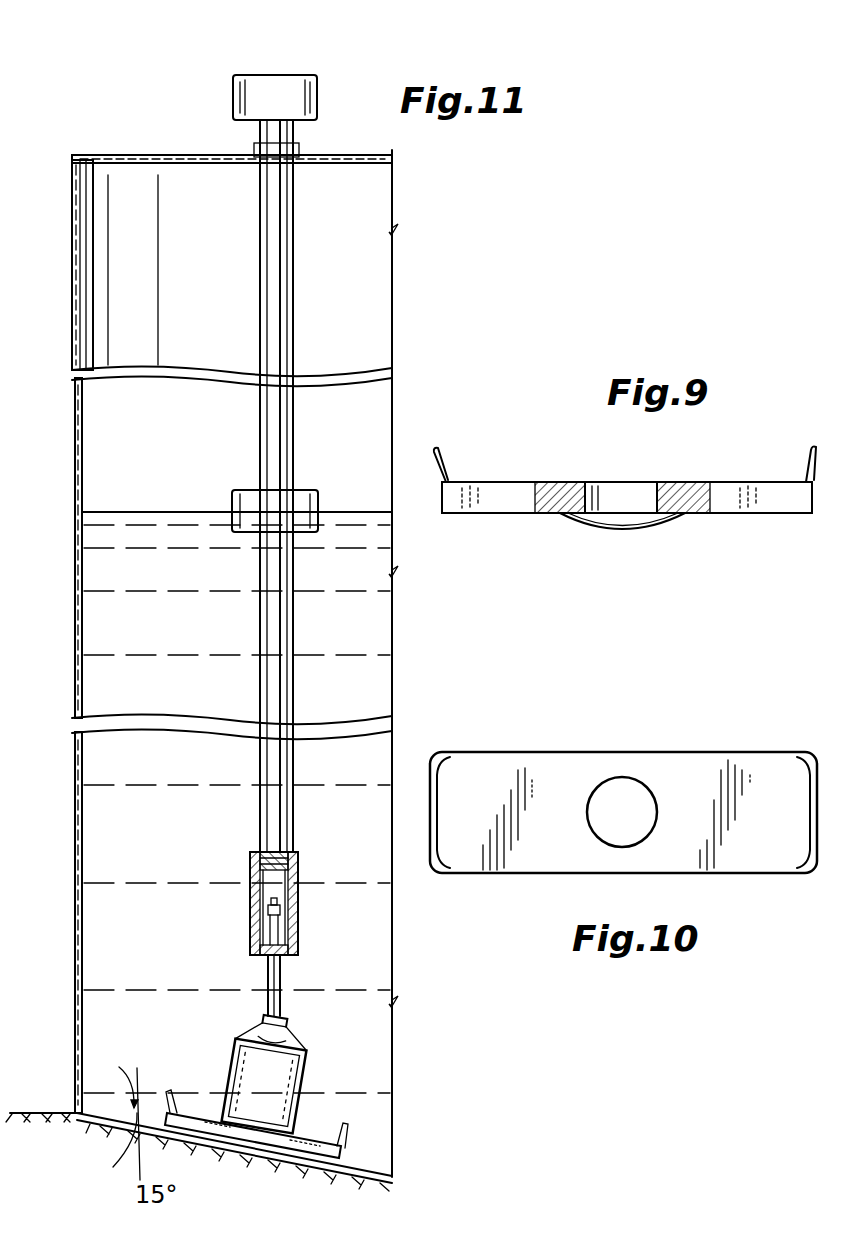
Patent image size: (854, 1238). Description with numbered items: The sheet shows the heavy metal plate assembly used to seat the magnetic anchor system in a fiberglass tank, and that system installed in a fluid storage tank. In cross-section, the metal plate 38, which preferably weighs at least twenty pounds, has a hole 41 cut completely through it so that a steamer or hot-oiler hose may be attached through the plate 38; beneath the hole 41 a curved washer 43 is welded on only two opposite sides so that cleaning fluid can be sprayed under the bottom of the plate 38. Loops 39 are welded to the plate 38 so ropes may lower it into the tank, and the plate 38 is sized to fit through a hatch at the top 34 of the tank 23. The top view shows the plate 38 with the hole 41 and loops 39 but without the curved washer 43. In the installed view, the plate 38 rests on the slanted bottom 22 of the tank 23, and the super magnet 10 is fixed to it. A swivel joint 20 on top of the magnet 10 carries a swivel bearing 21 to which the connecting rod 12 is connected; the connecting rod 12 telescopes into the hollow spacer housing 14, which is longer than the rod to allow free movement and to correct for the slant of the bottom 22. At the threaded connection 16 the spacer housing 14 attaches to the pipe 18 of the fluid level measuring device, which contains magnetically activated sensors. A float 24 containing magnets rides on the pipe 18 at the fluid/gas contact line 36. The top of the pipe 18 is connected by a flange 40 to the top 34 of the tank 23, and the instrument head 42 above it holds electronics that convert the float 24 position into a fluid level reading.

In FIG. 11, the super magnet 10 is at (295, 1112).
In FIG. 11, the connecting rod 12 is at (282, 1000).
In FIG. 11, the spacer housing 14 is at (302, 935).
In FIG. 11, the threaded connection 16 is at (295, 862).
In FIG. 11, the pipe 18 is at (290, 345).
In FIG. 11, the swivel joint 20 is at (308, 1050).
In FIG. 11, the swivel bearing 21 is at (285, 1022).
In FIG. 11, the bottom of the tank 22 is at (370, 1172).
In FIG. 11, the tank 23 is at (75, 285).
In FIG. 11, the float 24 is at (305, 490).
In FIG. 11, the top of the tank 34 is at (342, 157).
In FIG. 11, the fluid/gas contact line 36 is at (178, 512).
In FIG. 11, the metal plate 38 is at (310, 1140).
In FIG. 9, the metal plate 38 is at (740, 484).
In FIG. 10, the metal plate 38 is at (565, 785).
In FIG. 9, the loops 39 is at (450, 470).
In FIG. 10, the loops 39 is at (442, 780).
In FIG. 11, the flange 40 is at (258, 163).
In FIG. 9, the hole 41 is at (635, 495).
In FIG. 10, the hole 41 is at (638, 800).
In FIG. 11, the instrument head 42 is at (300, 80).
In FIG. 9, the curved washer 43 is at (592, 528).